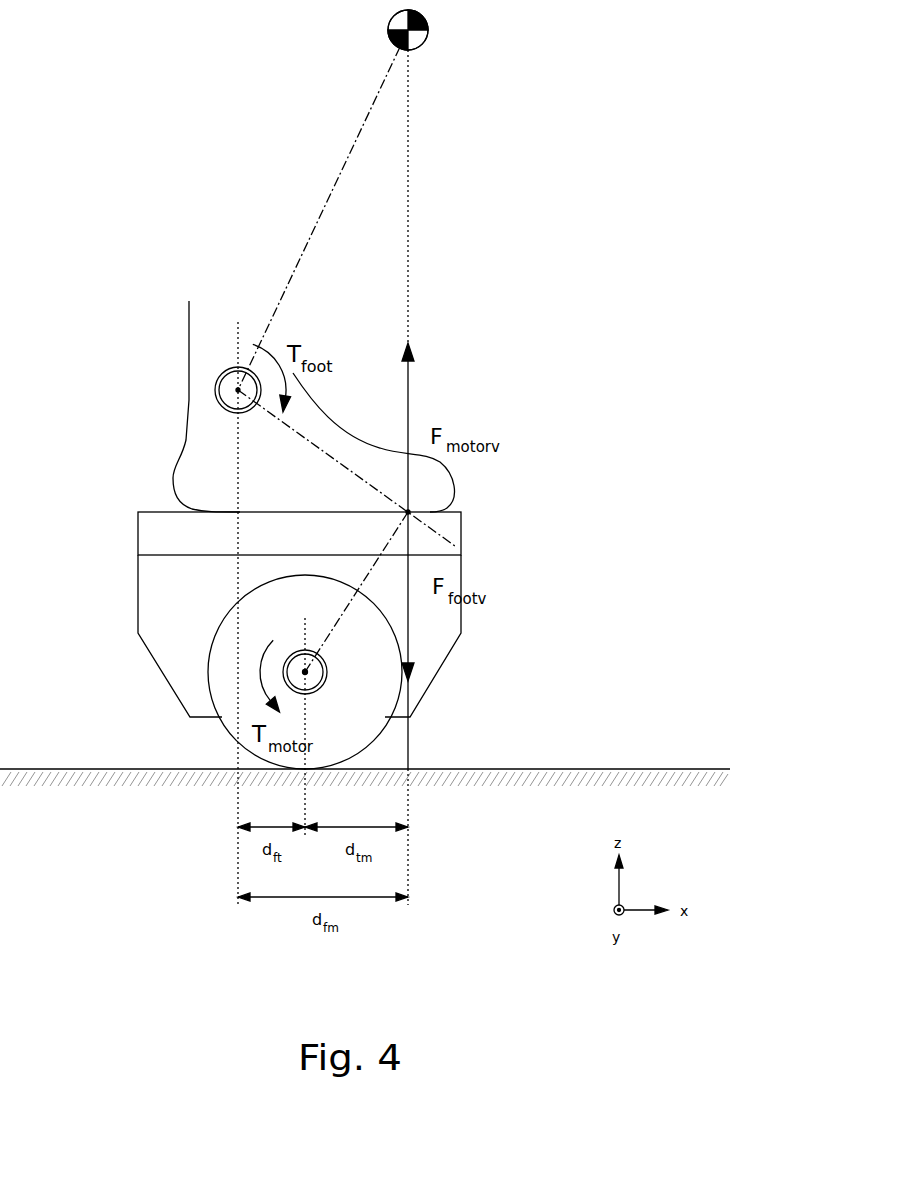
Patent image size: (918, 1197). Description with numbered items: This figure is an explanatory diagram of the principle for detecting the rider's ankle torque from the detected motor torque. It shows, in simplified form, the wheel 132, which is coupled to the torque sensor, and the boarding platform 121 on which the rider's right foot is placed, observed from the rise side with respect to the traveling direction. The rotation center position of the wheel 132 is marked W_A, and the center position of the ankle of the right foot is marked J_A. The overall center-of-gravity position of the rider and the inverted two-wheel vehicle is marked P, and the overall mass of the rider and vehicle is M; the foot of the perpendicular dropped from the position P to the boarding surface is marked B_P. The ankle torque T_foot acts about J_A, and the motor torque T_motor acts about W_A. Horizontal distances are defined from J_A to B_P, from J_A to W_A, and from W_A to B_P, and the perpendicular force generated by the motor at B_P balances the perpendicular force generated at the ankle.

The boarding platform 121 is at (461, 526).
The wheel 132 is at (215, 722).
The overall center-of-gravity position P is at (388, 32).
The overall mass M is at (427, 47).
The center position of the ankle JA is at (215, 393).
The rotation center position of the wheel WA is at (323, 684).
The foot perpendicular to the boarding surface BP is at (461, 543).